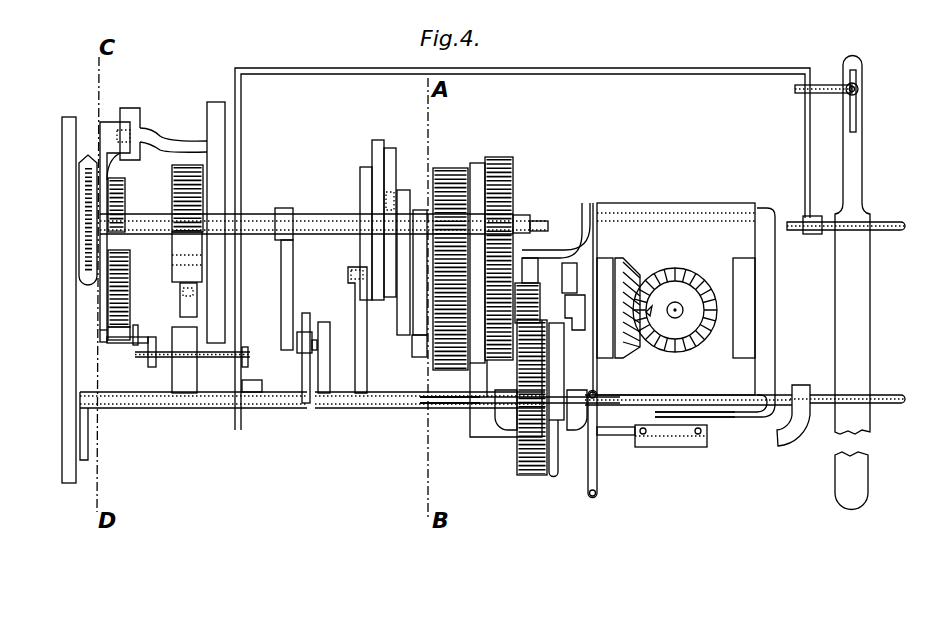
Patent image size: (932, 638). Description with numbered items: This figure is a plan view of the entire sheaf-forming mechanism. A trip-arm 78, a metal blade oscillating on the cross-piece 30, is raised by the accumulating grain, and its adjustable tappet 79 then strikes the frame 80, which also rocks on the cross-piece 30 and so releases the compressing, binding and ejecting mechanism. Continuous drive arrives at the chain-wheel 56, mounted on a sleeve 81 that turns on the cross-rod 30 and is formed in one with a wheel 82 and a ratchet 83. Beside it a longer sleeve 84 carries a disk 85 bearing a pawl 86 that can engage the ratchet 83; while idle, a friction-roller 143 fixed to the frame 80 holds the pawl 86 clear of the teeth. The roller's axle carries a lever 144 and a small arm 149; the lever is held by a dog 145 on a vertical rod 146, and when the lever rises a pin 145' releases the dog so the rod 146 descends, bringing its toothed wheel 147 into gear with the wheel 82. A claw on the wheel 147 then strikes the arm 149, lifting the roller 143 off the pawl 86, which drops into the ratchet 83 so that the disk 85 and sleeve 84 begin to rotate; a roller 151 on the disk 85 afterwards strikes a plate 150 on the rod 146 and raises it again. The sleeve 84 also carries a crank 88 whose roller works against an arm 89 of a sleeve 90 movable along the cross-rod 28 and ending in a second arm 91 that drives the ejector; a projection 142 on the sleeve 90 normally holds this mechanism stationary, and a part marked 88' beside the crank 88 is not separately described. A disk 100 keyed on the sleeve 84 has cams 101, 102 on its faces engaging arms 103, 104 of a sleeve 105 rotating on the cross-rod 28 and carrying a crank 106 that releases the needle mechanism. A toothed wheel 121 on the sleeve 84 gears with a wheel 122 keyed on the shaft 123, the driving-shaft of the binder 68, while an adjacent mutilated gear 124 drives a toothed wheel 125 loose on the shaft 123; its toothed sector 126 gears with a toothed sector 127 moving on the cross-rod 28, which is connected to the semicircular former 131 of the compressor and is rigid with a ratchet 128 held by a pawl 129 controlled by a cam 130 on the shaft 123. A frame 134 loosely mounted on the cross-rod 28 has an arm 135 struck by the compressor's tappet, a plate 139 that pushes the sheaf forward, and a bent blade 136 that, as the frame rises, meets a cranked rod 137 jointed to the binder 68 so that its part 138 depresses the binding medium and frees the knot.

The cross-rod 28 is at (882, 397).
The cross-piece 30 is at (892, 223).
The chain-wheel 56 is at (68, 168).
The binder 68 is at (676, 203).
The trip-arm 78 is at (855, 188).
The tappet 79 is at (813, 90).
The frame 80 is at (560, 62).
The sleeve 81 is at (126, 214).
The wheel 82 is at (125, 182).
The ratchet-wheel 83 is at (175, 252).
The sleeve 84 is at (295, 212).
The disk 85 is at (212, 177).
The pawl 86 is at (181, 300).
The crank 88 is at (304, 295).
The rod 88' is at (390, 403).
The arm 89 is at (308, 383).
The sleeve 90 is at (292, 404).
The arm 91 is at (83, 423).
The disk 100 is at (382, 138).
The cam 101 is at (367, 177).
The cam 102 is at (388, 160).
The arm 103 is at (348, 317).
The arm 104 is at (403, 337).
The sleeve 105 is at (370, 403).
The crank 106 is at (329, 369).
The toothed wheel 121 is at (438, 170).
The wheel 122 is at (448, 362).
The shaft 123 is at (650, 306).
The mutilated gear 124 is at (507, 158).
The toothed wheel 125 is at (421, 404).
The toothed sector 126 is at (541, 282).
The toothed sector 127 is at (519, 472).
The ratchet 128 is at (557, 426).
The pawl 129 is at (570, 272).
The cam 130 is at (577, 297).
The semicircular gage or former 131 is at (593, 479).
The frame 134 is at (763, 427).
The arm 135 is at (421, 408).
The bent blade 136 is at (523, 256).
The cranked rod 137 is at (758, 213).
The part 138 is at (735, 413).
The plate or front piece 139 is at (678, 437).
The projection 142 is at (250, 383).
The friction-roller 143 is at (185, 393).
The lever 144 is at (128, 354).
The pawl 145 is at (65, 332).
The pin or projection 145' is at (53, 351).
The vertical rod 146 is at (128, 343).
The toothed wheel 147 is at (118, 292).
The small arm 149 is at (134, 337).
The plate 150 is at (112, 130).
The roller 151 is at (132, 113).